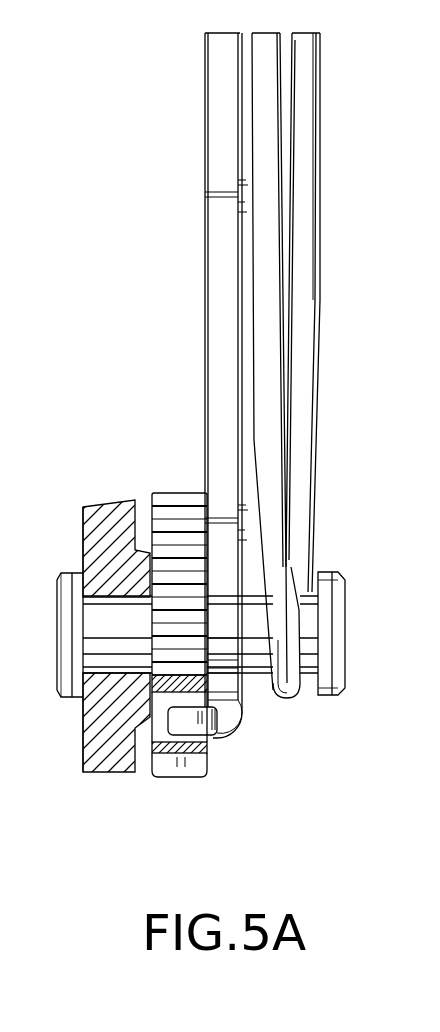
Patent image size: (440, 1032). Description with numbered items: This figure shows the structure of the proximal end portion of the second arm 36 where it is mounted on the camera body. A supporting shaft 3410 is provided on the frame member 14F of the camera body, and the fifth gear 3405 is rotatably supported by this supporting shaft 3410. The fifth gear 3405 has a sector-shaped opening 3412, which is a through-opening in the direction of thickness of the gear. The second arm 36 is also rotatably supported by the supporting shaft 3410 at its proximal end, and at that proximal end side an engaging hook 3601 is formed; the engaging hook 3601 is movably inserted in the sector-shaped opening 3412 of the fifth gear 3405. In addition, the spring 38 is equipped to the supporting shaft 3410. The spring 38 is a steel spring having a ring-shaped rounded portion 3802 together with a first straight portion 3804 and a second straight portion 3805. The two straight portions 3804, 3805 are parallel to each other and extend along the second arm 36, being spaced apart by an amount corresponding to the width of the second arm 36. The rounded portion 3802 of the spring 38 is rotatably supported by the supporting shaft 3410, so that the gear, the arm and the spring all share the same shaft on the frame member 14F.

The frame member 14F is at (95, 537).
The second arm 36 is at (220, 263).
The spring 38 is at (318, 382).
The fifth gear 3405 is at (177, 497).
The supporting shaft 3410 is at (378, 643).
The sector-shaped opening 3412 is at (153, 735).
The engaging hook 3601 is at (185, 722).
The rounded portion 3802 is at (304, 696).
The first straight portion 3804 is at (307, 70).
The second straight portion 3805 is at (267, 153).